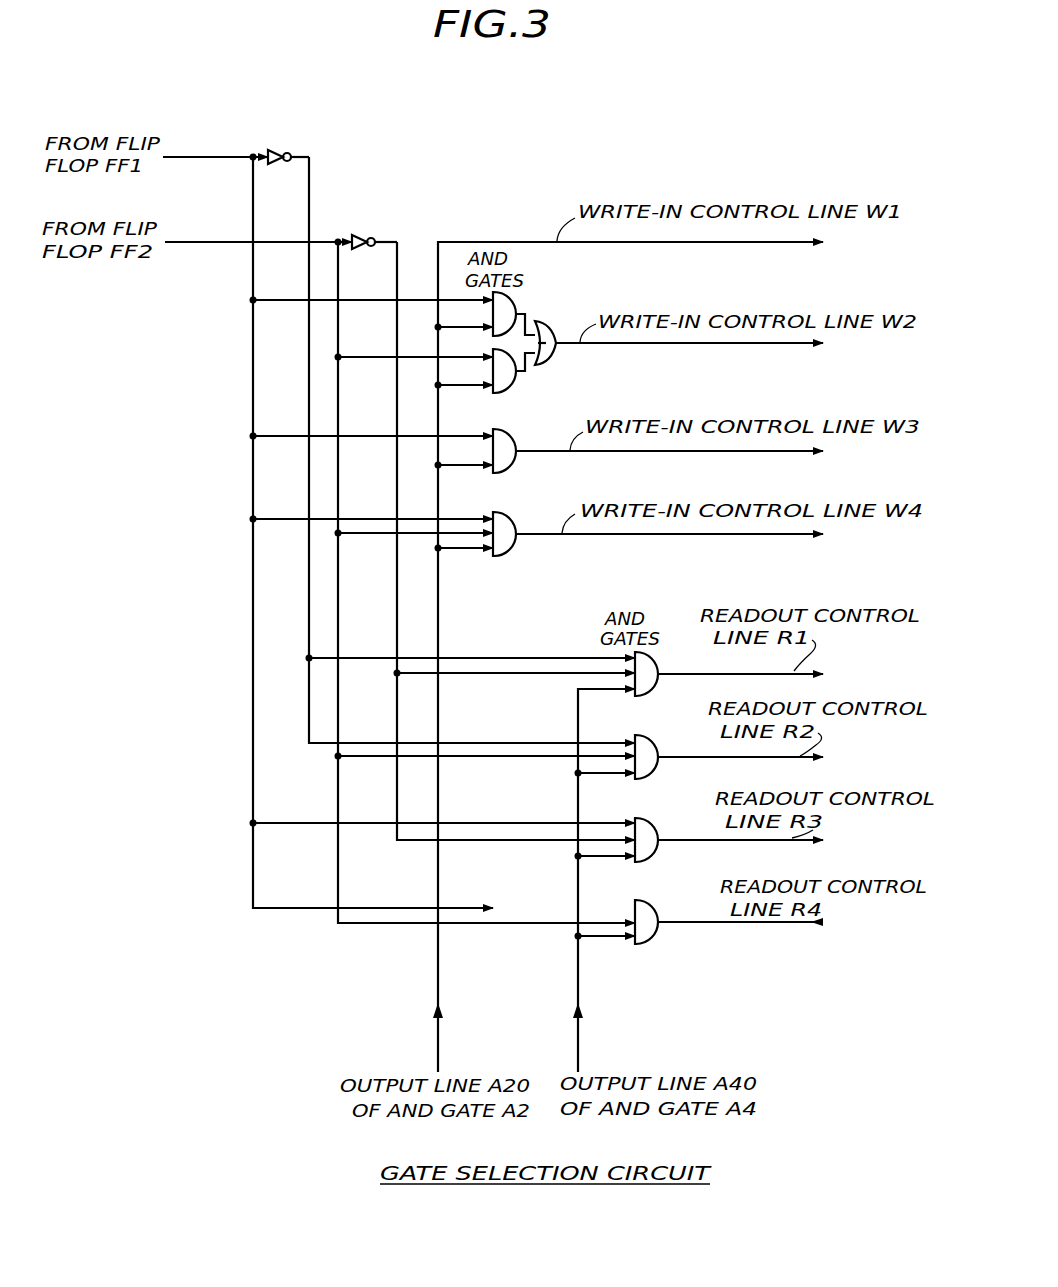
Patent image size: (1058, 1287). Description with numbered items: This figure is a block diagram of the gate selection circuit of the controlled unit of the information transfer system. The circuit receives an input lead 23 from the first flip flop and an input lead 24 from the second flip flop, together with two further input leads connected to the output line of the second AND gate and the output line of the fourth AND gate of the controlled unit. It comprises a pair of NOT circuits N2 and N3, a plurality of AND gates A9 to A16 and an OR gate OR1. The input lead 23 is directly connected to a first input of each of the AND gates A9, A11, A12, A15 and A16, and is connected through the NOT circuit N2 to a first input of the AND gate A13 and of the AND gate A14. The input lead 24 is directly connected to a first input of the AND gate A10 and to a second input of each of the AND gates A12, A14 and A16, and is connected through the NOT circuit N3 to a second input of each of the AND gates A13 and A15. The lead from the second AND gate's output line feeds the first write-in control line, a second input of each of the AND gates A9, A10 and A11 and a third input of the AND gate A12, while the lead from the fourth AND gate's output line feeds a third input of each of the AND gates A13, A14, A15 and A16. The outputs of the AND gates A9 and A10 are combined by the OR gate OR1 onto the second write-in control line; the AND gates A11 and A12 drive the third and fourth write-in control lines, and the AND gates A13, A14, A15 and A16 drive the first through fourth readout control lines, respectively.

The input lead 23 is at (200, 162).
The input lead 24 is at (203, 246).
The NOT circuit N2 is at (278, 151).
The NOT circuit N3 is at (350, 236).
The AND gate A9 is at (515, 300).
The AND gate A10 is at (509, 385).
The AND gate A11 is at (512, 462).
The AND gate A12 is at (512, 548).
The AND gate A13 is at (656, 688).
The AND gate A14 is at (656, 772).
The AND gate A15 is at (656, 855).
The AND gate A16 is at (656, 937).
The OR gate OR1 is at (556, 360).